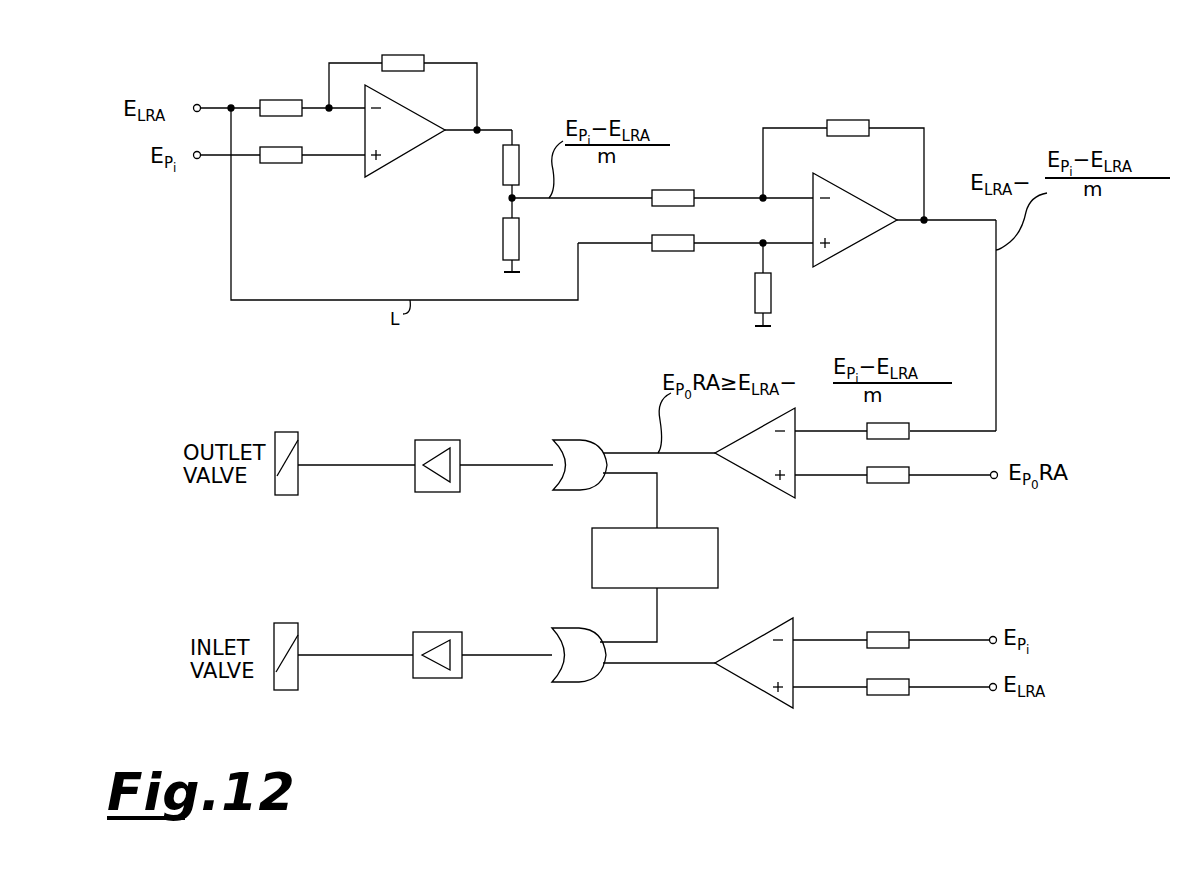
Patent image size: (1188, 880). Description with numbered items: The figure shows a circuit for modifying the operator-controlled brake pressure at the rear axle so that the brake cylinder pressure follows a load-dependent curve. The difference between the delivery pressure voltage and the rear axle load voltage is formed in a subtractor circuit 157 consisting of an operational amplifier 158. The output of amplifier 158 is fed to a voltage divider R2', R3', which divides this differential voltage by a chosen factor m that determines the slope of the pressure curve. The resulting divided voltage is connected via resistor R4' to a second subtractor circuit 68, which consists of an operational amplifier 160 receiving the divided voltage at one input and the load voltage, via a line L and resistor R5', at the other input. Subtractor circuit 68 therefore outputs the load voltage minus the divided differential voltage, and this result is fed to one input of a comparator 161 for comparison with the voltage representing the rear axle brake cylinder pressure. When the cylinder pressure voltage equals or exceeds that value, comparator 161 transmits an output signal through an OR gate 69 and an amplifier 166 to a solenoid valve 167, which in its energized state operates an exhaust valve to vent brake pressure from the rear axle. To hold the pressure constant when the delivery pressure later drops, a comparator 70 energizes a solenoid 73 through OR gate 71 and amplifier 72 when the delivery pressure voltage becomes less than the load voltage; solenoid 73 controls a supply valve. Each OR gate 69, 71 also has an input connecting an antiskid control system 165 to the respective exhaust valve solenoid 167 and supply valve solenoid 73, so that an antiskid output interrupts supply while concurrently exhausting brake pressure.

The subtractor circuit 157 is at (376, 56).
The operational amplifier 158 is at (407, 134).
The voltage divider resistor R2' is at (492, 174).
The voltage divider resistor R3' is at (492, 245).
The resistor R4' is at (690, 187).
The resistor R5' is at (690, 257).
The subtractor circuit 68 is at (818, 121).
The operational amplifier 160 is at (862, 225).
The comparator 161 is at (762, 468).
The OR gate 69 is at (575, 477).
The amplifier 166 is at (437, 447).
The solenoid valve 167 is at (288, 448).
The antiskid control system 165 is at (719, 553).
The OR gate 71 is at (575, 666).
The amplifier 72 is at (433, 637).
The solenoid 73 is at (289, 640).
The comparator 70 is at (764, 671).